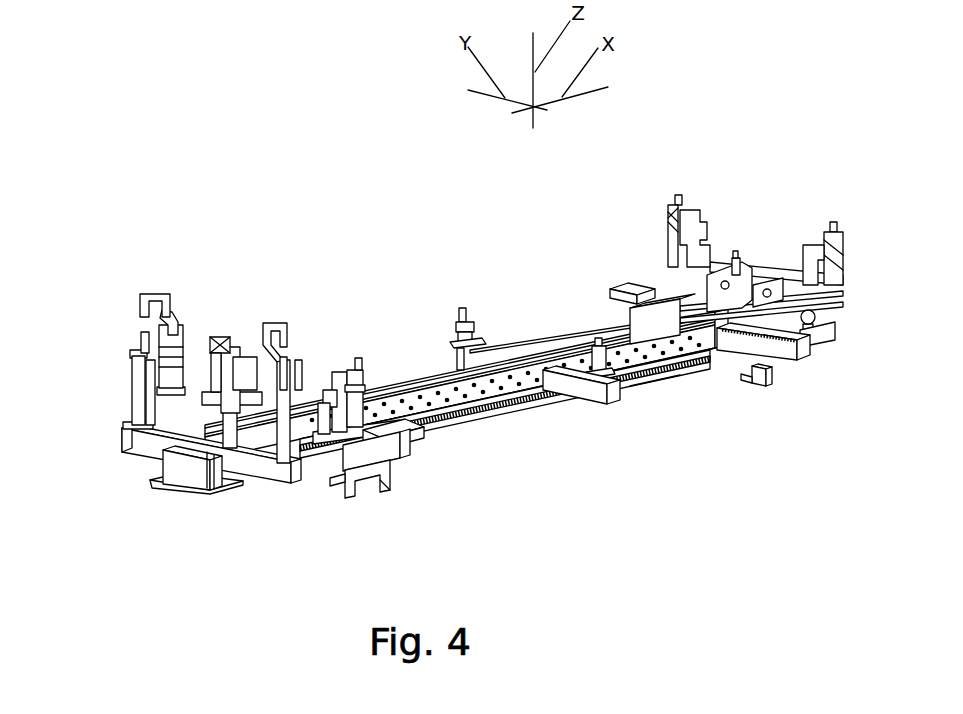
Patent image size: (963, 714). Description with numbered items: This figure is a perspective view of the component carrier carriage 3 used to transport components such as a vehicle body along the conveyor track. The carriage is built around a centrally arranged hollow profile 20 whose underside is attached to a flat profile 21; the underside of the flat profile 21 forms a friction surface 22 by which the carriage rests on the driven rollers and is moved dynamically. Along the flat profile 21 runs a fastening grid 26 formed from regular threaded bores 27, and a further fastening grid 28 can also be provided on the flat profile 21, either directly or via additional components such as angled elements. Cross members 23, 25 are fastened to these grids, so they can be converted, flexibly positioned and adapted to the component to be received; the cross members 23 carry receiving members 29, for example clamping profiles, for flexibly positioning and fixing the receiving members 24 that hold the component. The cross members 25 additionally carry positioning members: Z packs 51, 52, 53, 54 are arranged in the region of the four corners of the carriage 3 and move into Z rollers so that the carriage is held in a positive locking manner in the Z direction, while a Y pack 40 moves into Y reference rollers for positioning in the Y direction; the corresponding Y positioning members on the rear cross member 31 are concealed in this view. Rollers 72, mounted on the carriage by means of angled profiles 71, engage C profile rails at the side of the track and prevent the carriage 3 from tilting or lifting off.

The component carrier carriage 3 is at (393, 160).
The hollow profile 20 is at (190, 467).
The flat profile 21 is at (230, 484).
The friction surface 22 is at (185, 500).
The cross member 23 is at (140, 448).
The receiving member 24 is at (148, 283).
The cross member 25 is at (393, 468).
The fastening grid 26 is at (432, 400).
The threaded bore 27 is at (467, 403).
The further fastening grid 28 is at (533, 408).
The receiving member 29 is at (120, 430).
The rear cross member 31 is at (680, 300).
The Y pack 40 is at (385, 470).
The Z pack 51 is at (423, 445).
The Z pack 52 is at (205, 392).
The Z pack 53 is at (817, 340).
The Z pack 54 is at (620, 290).
The angled profile 71 is at (357, 485).
The roller 72 is at (332, 476).